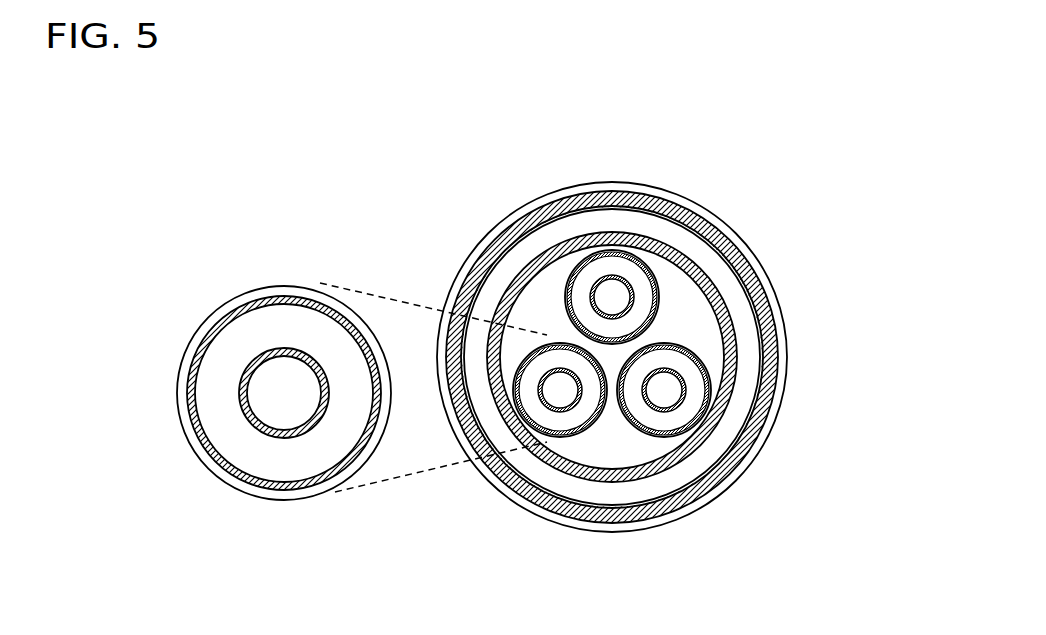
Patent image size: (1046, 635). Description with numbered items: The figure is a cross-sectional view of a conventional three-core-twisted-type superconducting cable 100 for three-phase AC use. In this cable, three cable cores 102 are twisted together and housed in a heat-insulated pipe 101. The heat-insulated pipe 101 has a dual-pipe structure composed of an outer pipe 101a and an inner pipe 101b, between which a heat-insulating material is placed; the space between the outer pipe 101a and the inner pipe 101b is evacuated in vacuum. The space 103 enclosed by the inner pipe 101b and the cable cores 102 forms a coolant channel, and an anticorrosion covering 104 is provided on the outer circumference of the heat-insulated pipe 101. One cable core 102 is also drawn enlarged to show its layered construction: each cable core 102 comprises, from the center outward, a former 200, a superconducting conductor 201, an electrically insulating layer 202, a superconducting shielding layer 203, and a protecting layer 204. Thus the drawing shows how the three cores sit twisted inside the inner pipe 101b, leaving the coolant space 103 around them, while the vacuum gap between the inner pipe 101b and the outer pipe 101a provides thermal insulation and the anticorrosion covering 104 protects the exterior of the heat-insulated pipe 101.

The superconducting cable 100 is at (668, 372).
The heat-insulated pipe 101 is at (673, 327).
The outer pipe 101a is at (730, 243).
The inner pipe 101b is at (688, 226).
The cable core 102 is at (404, 350).
The space 103 is at (708, 342).
The anticorrosion covering 104 is at (779, 417).
The former 200 is at (258, 383).
The superconducting conductor 201 is at (240, 403).
The electrically insulating layer 202 is at (237, 443).
The superconducting shielding layer 203 is at (257, 489).
The protecting layer 204 is at (318, 492).